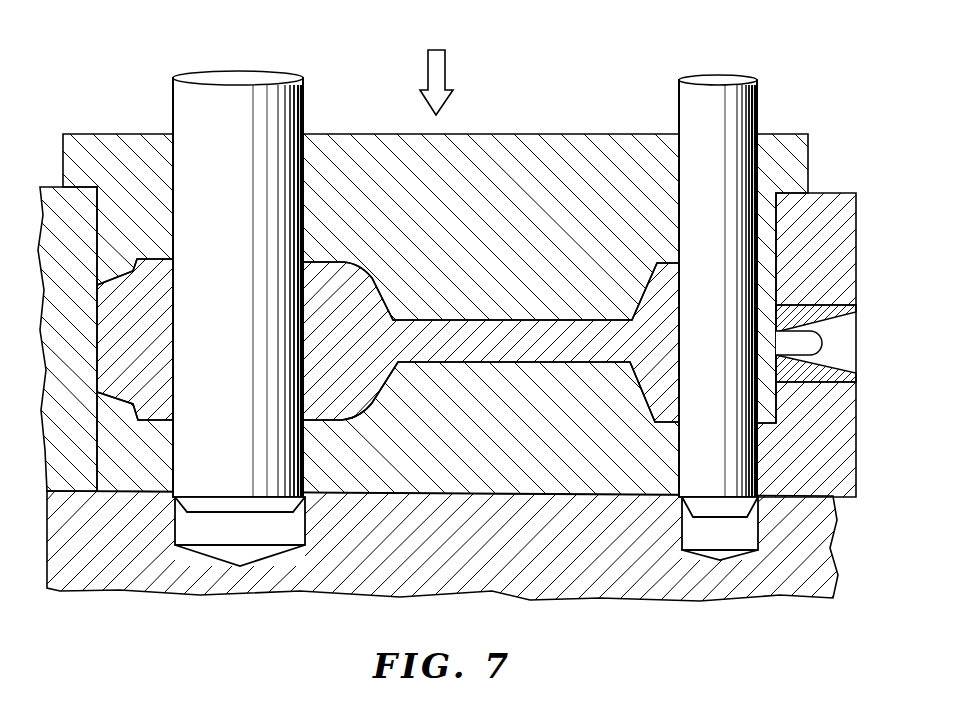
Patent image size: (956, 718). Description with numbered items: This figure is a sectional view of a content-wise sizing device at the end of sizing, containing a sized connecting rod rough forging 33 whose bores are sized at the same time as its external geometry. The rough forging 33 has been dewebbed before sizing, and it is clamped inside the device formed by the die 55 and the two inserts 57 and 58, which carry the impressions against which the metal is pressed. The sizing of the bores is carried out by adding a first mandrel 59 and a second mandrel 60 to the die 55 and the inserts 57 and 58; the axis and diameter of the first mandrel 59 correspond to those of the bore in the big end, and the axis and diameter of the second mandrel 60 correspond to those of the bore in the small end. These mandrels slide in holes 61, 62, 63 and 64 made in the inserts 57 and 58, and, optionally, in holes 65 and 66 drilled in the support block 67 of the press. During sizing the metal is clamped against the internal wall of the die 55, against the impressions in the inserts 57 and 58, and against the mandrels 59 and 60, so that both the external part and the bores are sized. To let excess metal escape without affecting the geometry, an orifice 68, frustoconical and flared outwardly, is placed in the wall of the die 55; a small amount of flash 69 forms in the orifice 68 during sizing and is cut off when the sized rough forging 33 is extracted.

The connecting rod rough forging 33 is at (500, 327).
The die 55 is at (848, 207).
The first insert 57 is at (548, 460).
The second insert 58 is at (797, 150).
The first mandrel 59 is at (285, 107).
The second mandrel 60 is at (743, 98).
The hole 61 is at (178, 165).
The hole 62 is at (173, 450).
The hole 63 is at (690, 132).
The hole 64 is at (758, 453).
The hole 65 is at (285, 528).
The hole 66 is at (695, 533).
The support block 67 is at (385, 577).
The orifice 68 is at (820, 305).
The flash 69 is at (810, 343).